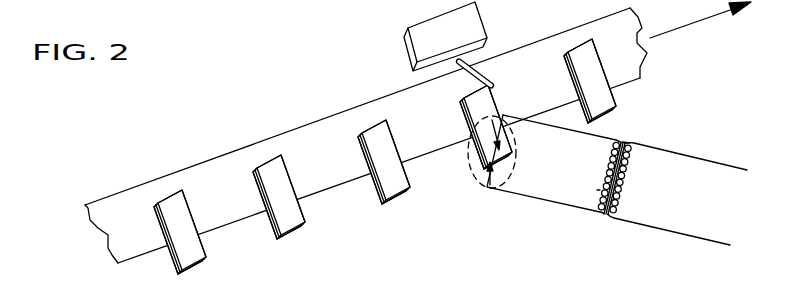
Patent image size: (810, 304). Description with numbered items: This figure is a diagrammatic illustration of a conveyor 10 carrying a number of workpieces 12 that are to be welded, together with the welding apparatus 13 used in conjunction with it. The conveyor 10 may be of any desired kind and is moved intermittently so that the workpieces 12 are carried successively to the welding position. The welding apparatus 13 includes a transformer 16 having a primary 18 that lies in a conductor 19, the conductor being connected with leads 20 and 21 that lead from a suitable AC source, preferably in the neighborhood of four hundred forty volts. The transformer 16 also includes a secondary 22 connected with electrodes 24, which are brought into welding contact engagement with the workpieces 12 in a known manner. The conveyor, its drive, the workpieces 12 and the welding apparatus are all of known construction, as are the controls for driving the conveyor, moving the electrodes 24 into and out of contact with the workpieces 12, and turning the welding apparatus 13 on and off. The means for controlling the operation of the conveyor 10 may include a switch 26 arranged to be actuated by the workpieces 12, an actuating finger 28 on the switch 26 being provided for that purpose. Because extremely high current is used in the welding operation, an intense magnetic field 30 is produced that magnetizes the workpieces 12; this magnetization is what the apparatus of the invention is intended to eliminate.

The conveyor 10 is at (213, 172).
The workpieces 12 is at (284, 219).
The welding apparatus 13 is at (539, 220).
The transformer 16 is at (604, 220).
The primary 18 is at (630, 183).
The conductor 19 is at (631, 143).
The lead 20 is at (657, 227).
The lead 21 is at (688, 152).
The secondary 22 is at (598, 190).
The electrodes 24 is at (541, 122).
The switch 26 is at (418, 32).
The actuating finger 28 is at (483, 76).
The magnetic field 30 is at (470, 182).